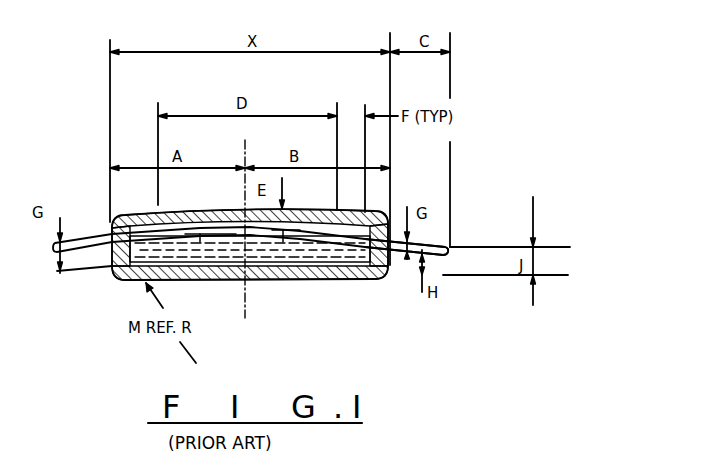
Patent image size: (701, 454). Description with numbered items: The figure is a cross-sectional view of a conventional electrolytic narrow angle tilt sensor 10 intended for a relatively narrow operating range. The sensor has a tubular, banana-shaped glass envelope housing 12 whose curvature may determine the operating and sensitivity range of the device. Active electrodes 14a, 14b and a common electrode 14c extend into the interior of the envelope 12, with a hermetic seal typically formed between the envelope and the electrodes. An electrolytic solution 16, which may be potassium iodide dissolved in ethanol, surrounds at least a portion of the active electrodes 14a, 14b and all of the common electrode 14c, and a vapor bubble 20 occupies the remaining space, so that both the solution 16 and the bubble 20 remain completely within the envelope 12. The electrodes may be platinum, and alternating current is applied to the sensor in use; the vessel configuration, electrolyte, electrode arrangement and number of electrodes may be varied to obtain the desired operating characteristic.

The narrow angle tilt sensor 10 is at (505, 72).
The glass envelope housing 12 is at (357, 268).
The active electrode 14a is at (84, 233).
The active electrode 14b is at (425, 243).
The common electrode 14c is at (93, 268).
The electrolytic solution 16 is at (308, 246).
The vapor bubble 20 is at (236, 238).